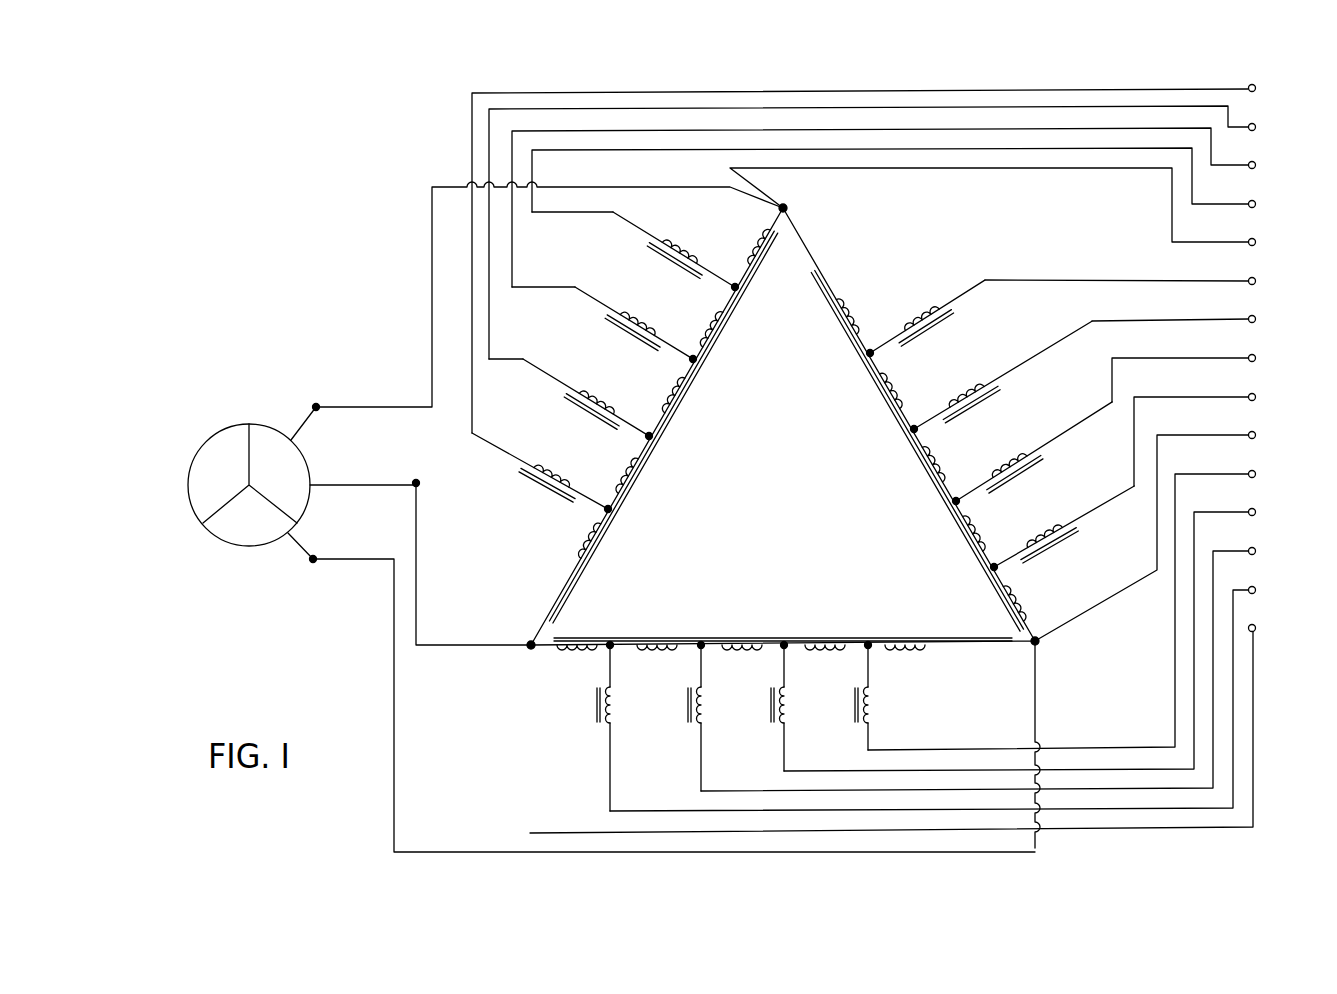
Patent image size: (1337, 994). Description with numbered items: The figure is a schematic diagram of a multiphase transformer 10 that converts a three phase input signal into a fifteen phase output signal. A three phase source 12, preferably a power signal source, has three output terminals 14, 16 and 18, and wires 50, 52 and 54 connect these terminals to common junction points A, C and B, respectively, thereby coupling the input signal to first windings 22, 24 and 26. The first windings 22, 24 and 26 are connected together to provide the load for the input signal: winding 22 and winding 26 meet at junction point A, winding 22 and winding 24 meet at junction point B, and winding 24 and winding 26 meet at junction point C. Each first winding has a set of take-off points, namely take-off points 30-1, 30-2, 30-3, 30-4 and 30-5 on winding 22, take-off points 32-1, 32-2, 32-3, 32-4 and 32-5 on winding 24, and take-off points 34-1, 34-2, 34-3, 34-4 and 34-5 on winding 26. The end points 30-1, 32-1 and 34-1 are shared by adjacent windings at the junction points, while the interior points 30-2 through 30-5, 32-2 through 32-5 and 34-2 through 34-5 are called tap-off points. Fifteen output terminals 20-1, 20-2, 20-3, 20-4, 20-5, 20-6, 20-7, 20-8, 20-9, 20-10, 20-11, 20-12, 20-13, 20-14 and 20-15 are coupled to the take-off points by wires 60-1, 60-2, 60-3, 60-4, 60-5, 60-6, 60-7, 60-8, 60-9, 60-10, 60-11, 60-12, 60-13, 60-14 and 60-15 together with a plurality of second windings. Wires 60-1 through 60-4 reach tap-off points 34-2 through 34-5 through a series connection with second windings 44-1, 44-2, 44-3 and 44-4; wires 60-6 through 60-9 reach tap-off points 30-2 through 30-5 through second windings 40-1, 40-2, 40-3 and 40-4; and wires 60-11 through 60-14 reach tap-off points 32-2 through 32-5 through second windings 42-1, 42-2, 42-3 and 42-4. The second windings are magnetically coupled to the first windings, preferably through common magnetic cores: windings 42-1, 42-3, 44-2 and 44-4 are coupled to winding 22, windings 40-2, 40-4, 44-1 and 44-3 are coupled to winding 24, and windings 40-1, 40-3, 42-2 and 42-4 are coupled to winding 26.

The multiphase transformer 10 is at (785, 424).
The source 12 is at (237, 423).
The output terminal 14 is at (328, 385).
The output terminal 16 is at (418, 476).
The output terminal 18 is at (328, 540).
The output terminal 20-1 is at (1259, 87).
The output terminal 20-2 is at (1259, 126).
The output terminal 20-3 is at (1259, 164).
The output terminal 20-4 is at (1259, 203).
The output terminal 20-5 is at (1259, 241).
The output terminal 20-6 is at (1259, 280).
The output terminal 20-7 is at (1259, 318).
The output terminal 20-8 is at (1259, 357).
The output terminal 20-9 is at (1259, 396).
The output terminal 20-10 is at (1259, 434).
The output terminal 20-11 is at (1259, 473).
The output terminal 20-12 is at (1259, 511).
The output terminal 20-13 is at (1259, 550).
The output terminal 20-14 is at (1259, 589).
The output terminal 20-15 is at (1259, 627).
The first winding 22 is at (902, 460).
The first winding 24 is at (761, 635).
The first winding 26 is at (652, 465).
The take-off point 30-1 is at (790, 209).
The tap-off point 30-2 is at (877, 354).
The tap-off point 30-3 is at (921, 429).
The tap-off point 30-4 is at (963, 501).
The tap-off point 30-5 is at (1003, 567).
The take-off point 32-1 is at (1020, 633).
The tap-off point 32-2 is at (867, 638).
The tap-off point 32-3 is at (786, 638).
The tap-off point 32-4 is at (702, 638).
The tap-off point 32-5 is at (610, 638).
The take-off point 34-1 is at (528, 639).
The tap-off point 34-2 is at (616, 511).
The tap-off point 34-3 is at (657, 436).
The tap-off point 34-4 is at (701, 360).
The tap-off point 34-5 is at (743, 291).
The second winding 40-1 is at (937, 299).
The second winding 40-2 is at (990, 377).
The second winding 40-3 is at (1024, 448).
The second winding 40-4 is at (1052, 514).
The second winding 42-1 is at (863, 724).
The second winding 42-2 is at (780, 724).
The second winding 42-3 is at (696, 724).
The second winding 42-4 is at (604, 724).
The second winding 44-1 is at (580, 466).
The second winding 44-2 is at (622, 386).
The second winding 44-3 is at (668, 316).
The second winding 44-4 is at (708, 242).
The wire 50 is at (430, 302).
The wire 52 is at (414, 516).
The wire 54 is at (393, 690).
The wire 60-1 is at (1041, 89).
The wire 60-2 is at (1091, 104).
The wire 60-3 is at (1106, 126).
The wire 60-4 is at (1139, 146).
The wire 60-5 is at (1086, 173).
The wire 60-6 is at (1041, 279).
The wire 60-7 is at (1122, 319).
The wire 60-8 is at (1136, 356).
The wire 60-9 is at (1154, 395).
The wire 60-10 is at (1171, 433).
The wire 60-11 is at (1181, 474).
The wire 60-12 is at (1236, 492).
The wire 60-13 is at (1210, 630).
The wire 60-14 is at (1230, 672).
The wire 60-15 is at (1257, 705).